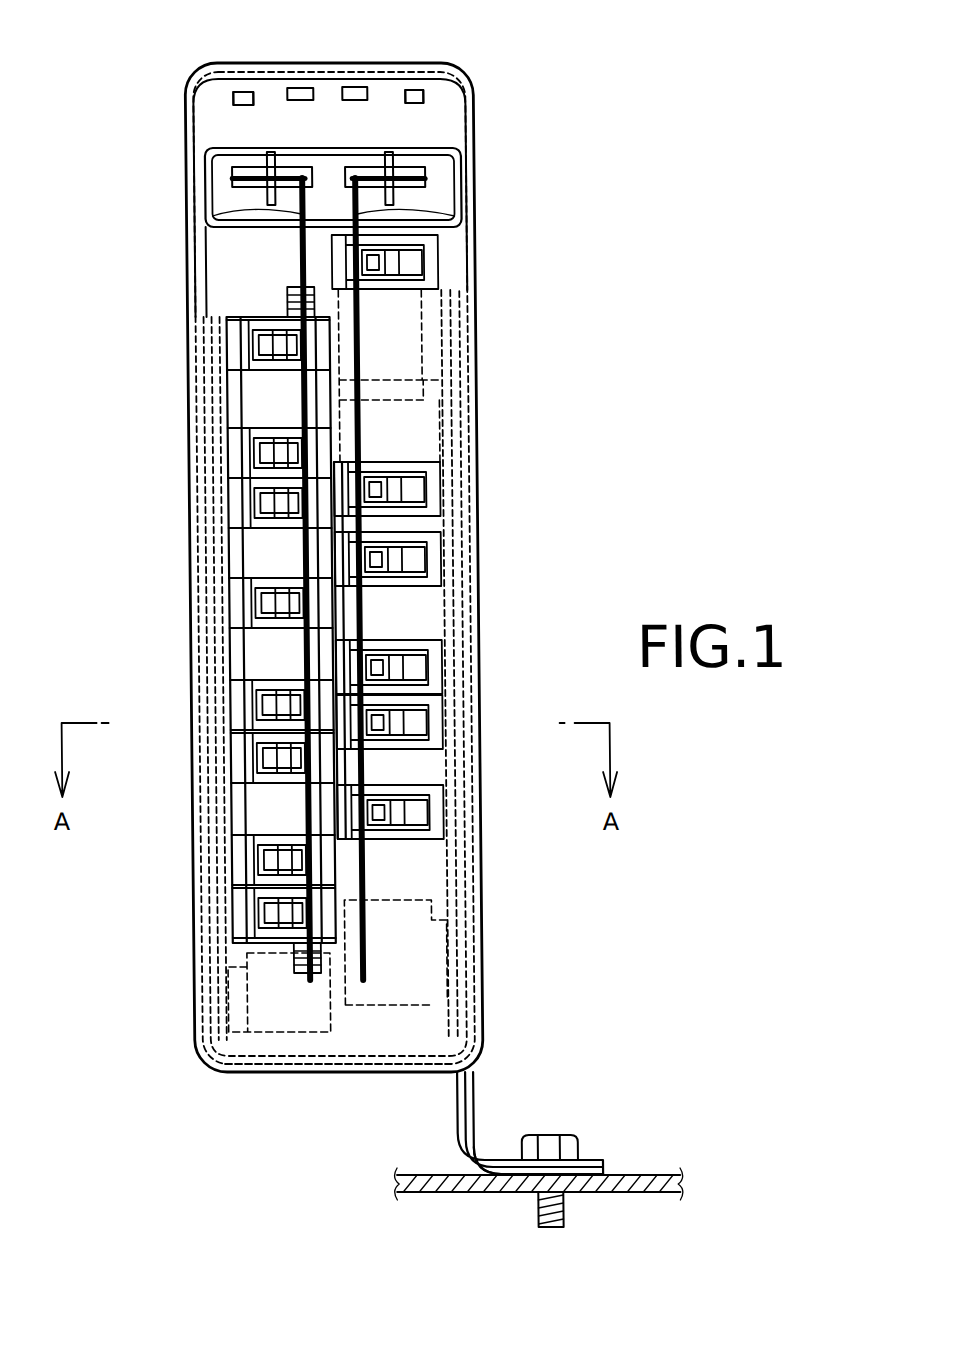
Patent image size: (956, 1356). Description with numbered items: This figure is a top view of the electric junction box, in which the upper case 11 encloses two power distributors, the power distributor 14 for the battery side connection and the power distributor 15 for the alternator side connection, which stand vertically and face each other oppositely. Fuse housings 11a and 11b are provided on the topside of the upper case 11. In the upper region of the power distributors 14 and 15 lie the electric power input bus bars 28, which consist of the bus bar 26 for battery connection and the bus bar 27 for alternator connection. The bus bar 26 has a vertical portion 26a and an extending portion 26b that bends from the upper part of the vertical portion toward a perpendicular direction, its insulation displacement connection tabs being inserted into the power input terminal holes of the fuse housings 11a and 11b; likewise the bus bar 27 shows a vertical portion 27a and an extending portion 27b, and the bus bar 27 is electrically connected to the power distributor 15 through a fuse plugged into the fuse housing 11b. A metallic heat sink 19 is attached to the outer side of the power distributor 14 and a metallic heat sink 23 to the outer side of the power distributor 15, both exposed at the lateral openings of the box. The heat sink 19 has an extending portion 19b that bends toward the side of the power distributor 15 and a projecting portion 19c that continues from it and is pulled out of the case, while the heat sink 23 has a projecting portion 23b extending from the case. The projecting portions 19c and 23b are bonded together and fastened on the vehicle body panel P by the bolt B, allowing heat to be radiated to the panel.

The upper case 11 is at (185, 124).
The fuse housing 11a is at (265, 425).
The fuse housing 11b is at (400, 460).
The power distributor 14 is at (178, 527).
The power distributor 15 is at (475, 527).
The heat sink 19 is at (183, 852).
The extending portion 19b is at (287, 1058).
The projecting portion 19c is at (449, 1170).
The heat sink 23 is at (484, 848).
The projecting portion 23b is at (486, 1160).
The bus bar 26 is at (287, 263).
The vertical portion 26a is at (250, 173).
The extending portion 26b is at (212, 226).
The bus bar 27 is at (335, 311).
The vertical portion 27a is at (402, 173).
The extending portion 27b is at (452, 226).
The electric power input bus bars 28 is at (88, 237).
The bolt B is at (562, 1135).
The vehicle body panel P is at (621, 1193).